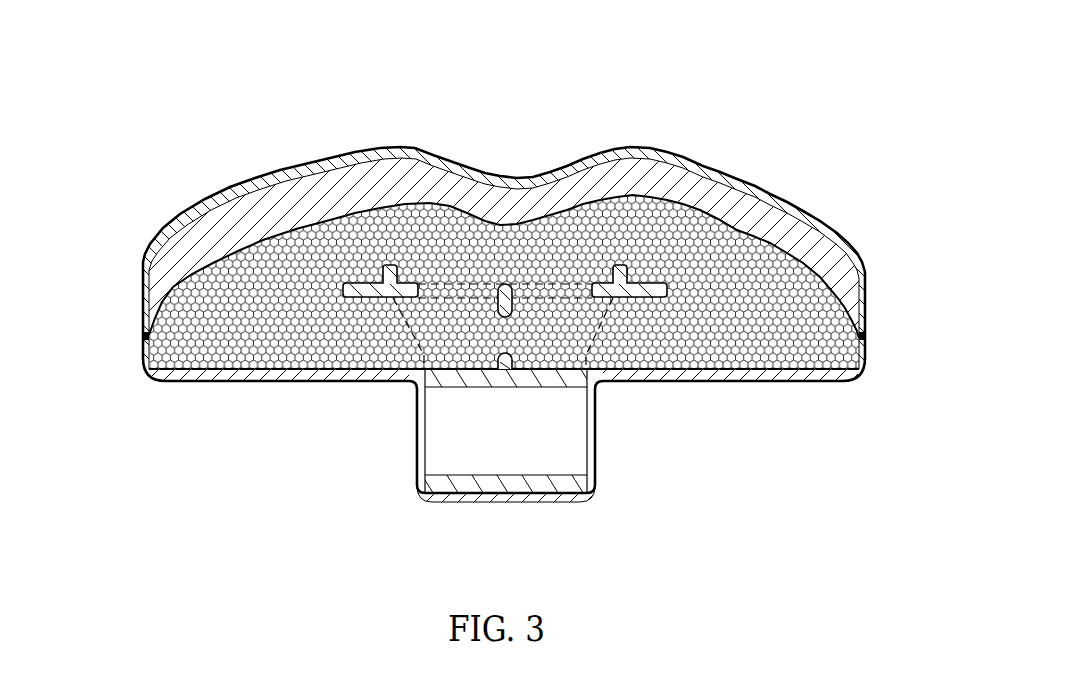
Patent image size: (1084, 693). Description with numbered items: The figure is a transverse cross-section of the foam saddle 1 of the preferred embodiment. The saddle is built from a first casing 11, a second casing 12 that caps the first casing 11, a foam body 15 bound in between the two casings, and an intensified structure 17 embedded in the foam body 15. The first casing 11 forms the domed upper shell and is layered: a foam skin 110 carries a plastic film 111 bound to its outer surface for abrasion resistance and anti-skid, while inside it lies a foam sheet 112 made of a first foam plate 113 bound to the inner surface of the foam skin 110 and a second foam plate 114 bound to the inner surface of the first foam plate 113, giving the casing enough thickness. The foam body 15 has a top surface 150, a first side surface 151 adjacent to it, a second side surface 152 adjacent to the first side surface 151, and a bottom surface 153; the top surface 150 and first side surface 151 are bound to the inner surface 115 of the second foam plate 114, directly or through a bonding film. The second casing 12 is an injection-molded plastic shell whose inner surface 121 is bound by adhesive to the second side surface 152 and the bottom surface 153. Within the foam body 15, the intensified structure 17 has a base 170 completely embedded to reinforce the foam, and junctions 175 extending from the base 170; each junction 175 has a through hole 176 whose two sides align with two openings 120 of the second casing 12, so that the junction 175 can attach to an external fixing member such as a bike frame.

The foam saddle 1 is at (200, 49).
The first casing 11 is at (504, 221).
The foam skin 110 is at (720, 175).
The plastic film 111 is at (643, 152).
The foam sheet 112 is at (543, 214).
The first foam plate 113 is at (785, 220).
The second foam plate 114 is at (812, 263).
The inner surface 115 is at (262, 244).
The second casing 12 is at (507, 420).
The openings 120 is at (420, 487).
The inner surface 121 is at (715, 362).
The foam body 15 is at (828, 333).
The top surface 150 is at (367, 203).
The first side surface 151 is at (173, 297).
The second side surface 152 is at (146, 338).
The bottom surface 153 is at (813, 373).
The intensified structure 17 is at (453, 398).
The base 170 is at (367, 290).
The junction 175 is at (433, 483).
The through hole 176 is at (543, 387).